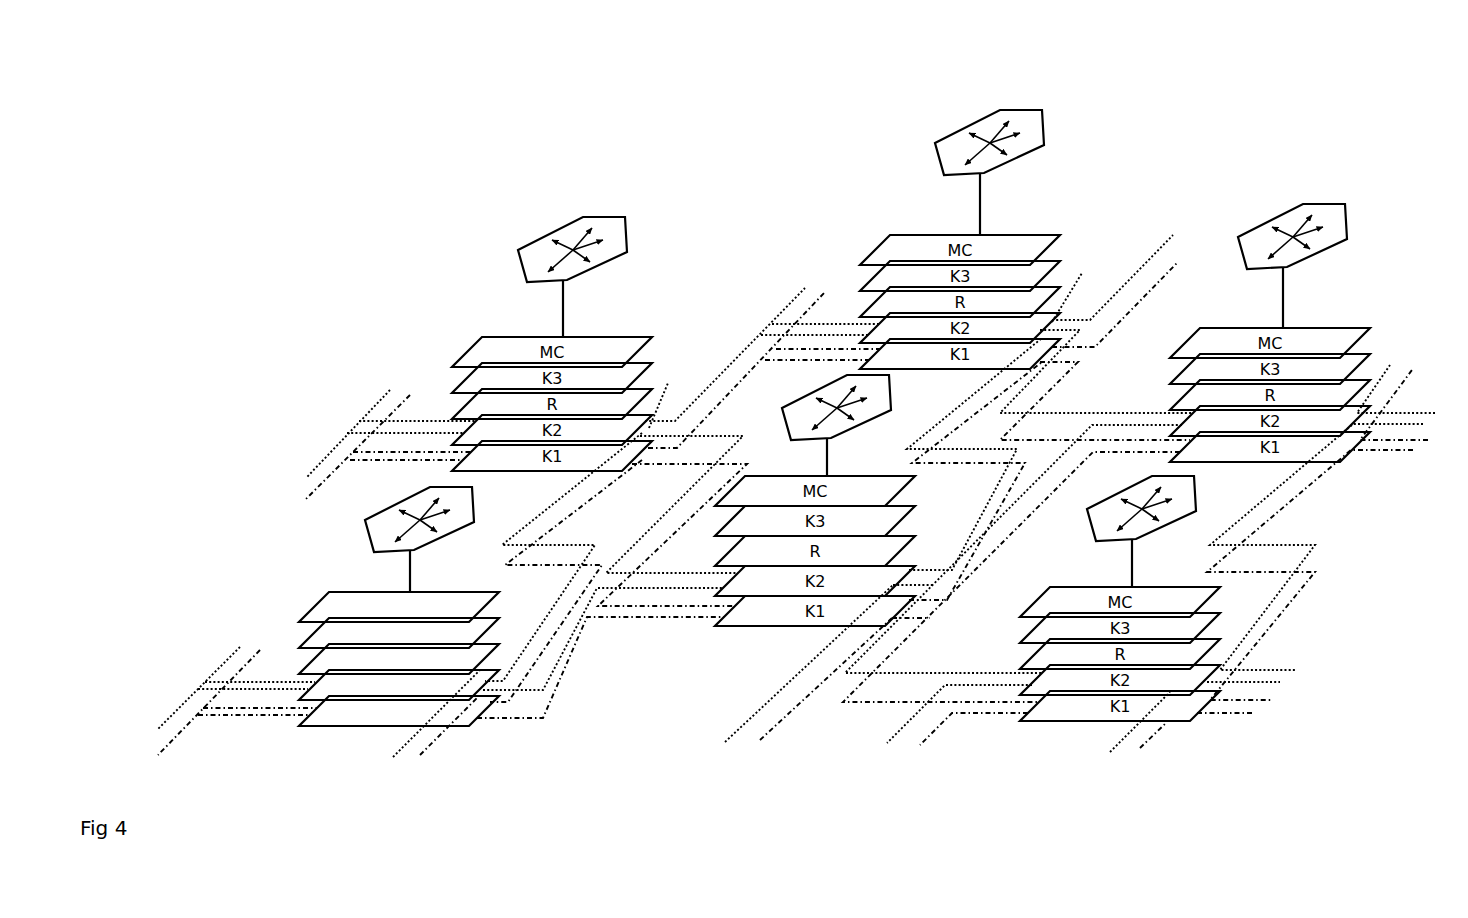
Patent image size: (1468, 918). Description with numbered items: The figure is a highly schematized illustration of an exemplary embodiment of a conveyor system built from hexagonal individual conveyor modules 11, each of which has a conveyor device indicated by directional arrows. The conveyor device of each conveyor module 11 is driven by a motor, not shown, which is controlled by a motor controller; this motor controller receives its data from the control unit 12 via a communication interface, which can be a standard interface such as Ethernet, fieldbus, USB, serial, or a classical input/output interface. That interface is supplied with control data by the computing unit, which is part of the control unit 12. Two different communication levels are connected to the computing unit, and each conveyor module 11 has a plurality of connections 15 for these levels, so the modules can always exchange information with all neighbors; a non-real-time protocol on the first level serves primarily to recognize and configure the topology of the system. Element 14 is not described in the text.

The conveyor module 11 is at (1063, 132).
The control unit 12 is at (419, 644).
The container layers K1, K2 14 is at (340, 684).
The connections 15 is at (1361, 417).